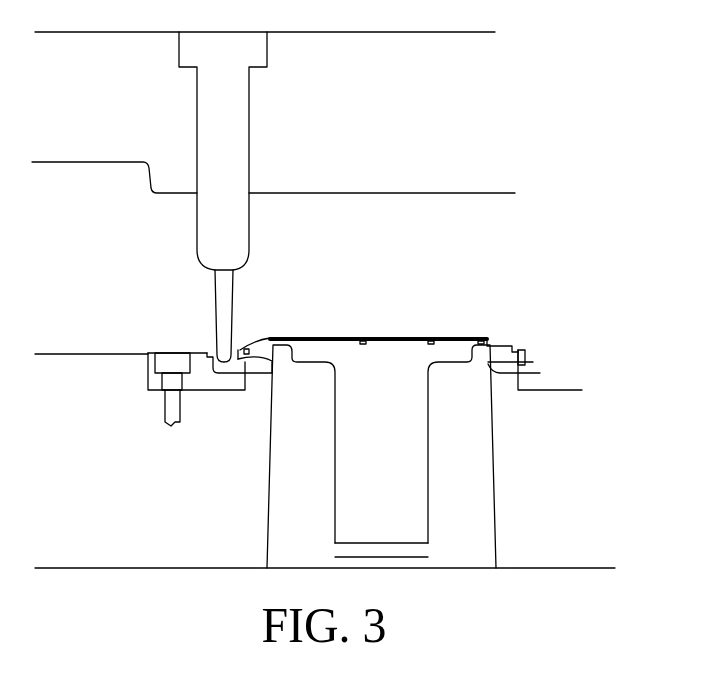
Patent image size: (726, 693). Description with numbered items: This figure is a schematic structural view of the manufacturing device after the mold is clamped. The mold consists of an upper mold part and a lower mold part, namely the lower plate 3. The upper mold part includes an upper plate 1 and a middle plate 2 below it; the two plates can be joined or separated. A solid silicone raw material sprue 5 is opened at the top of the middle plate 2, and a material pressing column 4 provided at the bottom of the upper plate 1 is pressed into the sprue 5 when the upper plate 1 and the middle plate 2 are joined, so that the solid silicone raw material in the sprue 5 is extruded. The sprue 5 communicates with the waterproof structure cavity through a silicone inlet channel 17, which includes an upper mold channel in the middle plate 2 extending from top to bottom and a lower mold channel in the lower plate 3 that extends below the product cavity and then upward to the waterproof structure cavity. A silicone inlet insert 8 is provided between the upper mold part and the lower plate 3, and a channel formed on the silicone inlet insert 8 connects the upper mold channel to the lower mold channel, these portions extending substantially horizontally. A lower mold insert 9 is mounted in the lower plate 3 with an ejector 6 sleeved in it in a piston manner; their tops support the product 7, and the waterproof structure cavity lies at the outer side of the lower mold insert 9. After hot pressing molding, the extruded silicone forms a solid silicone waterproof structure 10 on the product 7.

The upper plate 1 is at (265, 88).
The middle plate 2 is at (273, 206).
The lower plate 3 is at (325, 459).
The material pressing column 4 is at (223, 197).
The solid silicone raw material sprue 5 is at (214, 272).
The ejector 6 is at (381, 505).
The product 7 is at (362, 338).
The silicone inlet insert 8 is at (196, 389).
The lower mold insert 9 is at (381, 456).
The solid silicone waterproof structure 10 is at (257, 348).
The silicone inlet channel 17 is at (234, 357).